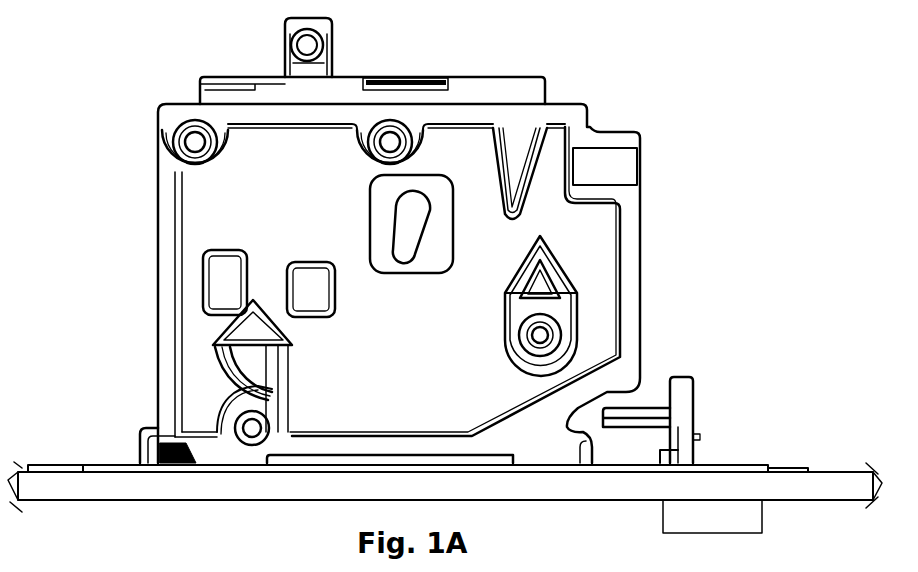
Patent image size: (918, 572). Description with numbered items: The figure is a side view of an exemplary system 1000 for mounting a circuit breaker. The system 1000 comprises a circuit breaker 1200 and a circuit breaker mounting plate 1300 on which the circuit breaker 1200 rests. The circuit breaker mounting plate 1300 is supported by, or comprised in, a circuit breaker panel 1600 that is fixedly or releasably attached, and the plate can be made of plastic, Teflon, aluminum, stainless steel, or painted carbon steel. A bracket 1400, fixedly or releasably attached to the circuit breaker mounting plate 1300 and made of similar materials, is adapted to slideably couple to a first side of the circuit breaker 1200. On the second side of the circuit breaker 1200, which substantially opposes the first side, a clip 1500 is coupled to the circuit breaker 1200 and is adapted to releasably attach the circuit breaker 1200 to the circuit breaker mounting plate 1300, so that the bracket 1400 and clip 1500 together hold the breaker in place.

The system 1000 is at (427, 240).
The circuit breaker 1200 is at (390, 310).
The circuit breaker mounting plate 1300 is at (418, 457).
The bracket 1400 is at (150, 425).
The clip 1500 is at (678, 375).
The circuit breaker panel 1600 is at (445, 497).